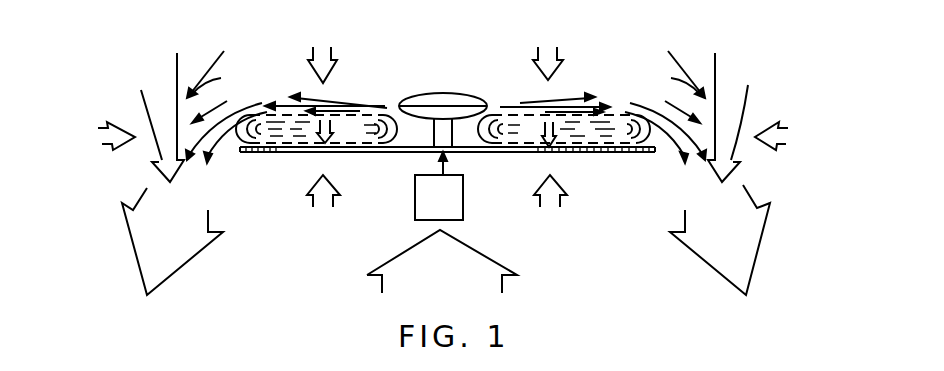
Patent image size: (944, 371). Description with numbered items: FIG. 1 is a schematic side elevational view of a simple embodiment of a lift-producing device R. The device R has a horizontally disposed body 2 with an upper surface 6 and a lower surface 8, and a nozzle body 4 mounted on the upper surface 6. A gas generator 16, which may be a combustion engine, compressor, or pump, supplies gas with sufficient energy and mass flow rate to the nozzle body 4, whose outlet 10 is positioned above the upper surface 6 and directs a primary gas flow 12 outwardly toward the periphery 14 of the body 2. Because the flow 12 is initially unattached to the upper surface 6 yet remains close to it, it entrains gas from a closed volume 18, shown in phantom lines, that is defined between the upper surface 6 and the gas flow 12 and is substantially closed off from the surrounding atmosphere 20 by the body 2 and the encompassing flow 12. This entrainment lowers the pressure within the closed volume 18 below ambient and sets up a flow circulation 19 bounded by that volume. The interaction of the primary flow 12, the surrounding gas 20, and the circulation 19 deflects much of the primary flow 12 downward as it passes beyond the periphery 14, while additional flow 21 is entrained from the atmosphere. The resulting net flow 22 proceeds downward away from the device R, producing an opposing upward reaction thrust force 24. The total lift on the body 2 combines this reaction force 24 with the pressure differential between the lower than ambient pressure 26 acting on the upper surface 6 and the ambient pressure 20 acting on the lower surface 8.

The body 2 is at (410, 147).
The nozzle body 4 is at (449, 93).
The upper surface 6 is at (493, 147).
The lower surface 8 is at (490, 153).
The outlet 10 is at (485, 104).
The primary gas flow 12 is at (277, 94).
The periphery 14 is at (240, 148).
The gas generator 16 is at (449, 199).
The closed volume 18 is at (263, 140).
The flow circulation 19 is at (298, 138).
The surrounding atmosphere 20 is at (110, 146).
The additional entrained flow 21 is at (190, 62).
The net flow 22 is at (180, 270).
The reaction thrust force 24 is at (400, 282).
The lower than ambient pressure 26 is at (436, 133).
The lift-producing device R is at (418, 62).